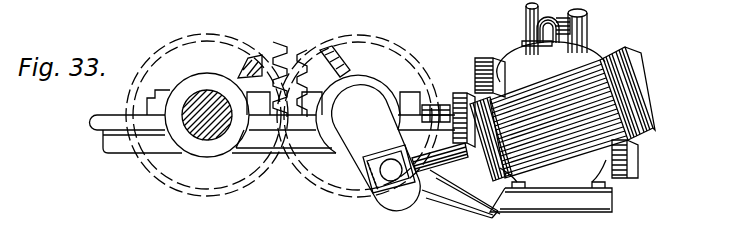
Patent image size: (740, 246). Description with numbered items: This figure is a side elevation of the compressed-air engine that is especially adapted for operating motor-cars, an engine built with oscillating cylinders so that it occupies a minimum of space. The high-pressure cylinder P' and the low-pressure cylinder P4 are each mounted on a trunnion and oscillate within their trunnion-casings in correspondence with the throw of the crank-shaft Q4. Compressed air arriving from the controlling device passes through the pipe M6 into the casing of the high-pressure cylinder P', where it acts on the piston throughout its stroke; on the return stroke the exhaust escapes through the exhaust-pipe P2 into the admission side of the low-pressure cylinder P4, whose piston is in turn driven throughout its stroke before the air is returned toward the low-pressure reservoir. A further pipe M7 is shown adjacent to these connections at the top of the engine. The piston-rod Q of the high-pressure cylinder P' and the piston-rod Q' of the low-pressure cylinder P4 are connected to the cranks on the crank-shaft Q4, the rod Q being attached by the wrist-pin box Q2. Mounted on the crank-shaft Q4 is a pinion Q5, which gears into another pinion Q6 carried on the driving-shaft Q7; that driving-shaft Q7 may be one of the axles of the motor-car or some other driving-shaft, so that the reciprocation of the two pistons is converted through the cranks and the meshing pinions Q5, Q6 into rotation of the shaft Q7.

The driving-shaft Q7 is at (203, 120).
The pinion Q6 is at (252, 77).
The pinion Q5 is at (330, 75).
The crank-shaft Q4 is at (357, 118).
The wrist-pin box Q2 is at (386, 188).
The piston-rod Q is at (456, 182).
The piston-rod Q' is at (436, 80).
The low-pressure cylinder P4 is at (582, 245).
The high-pressure cylinder P' is at (562, 111).
The exhaust-pipe P2 is at (536, 33).
The supply pipe M7 is at (524, 20).
The pipe M6 is at (584, 27).